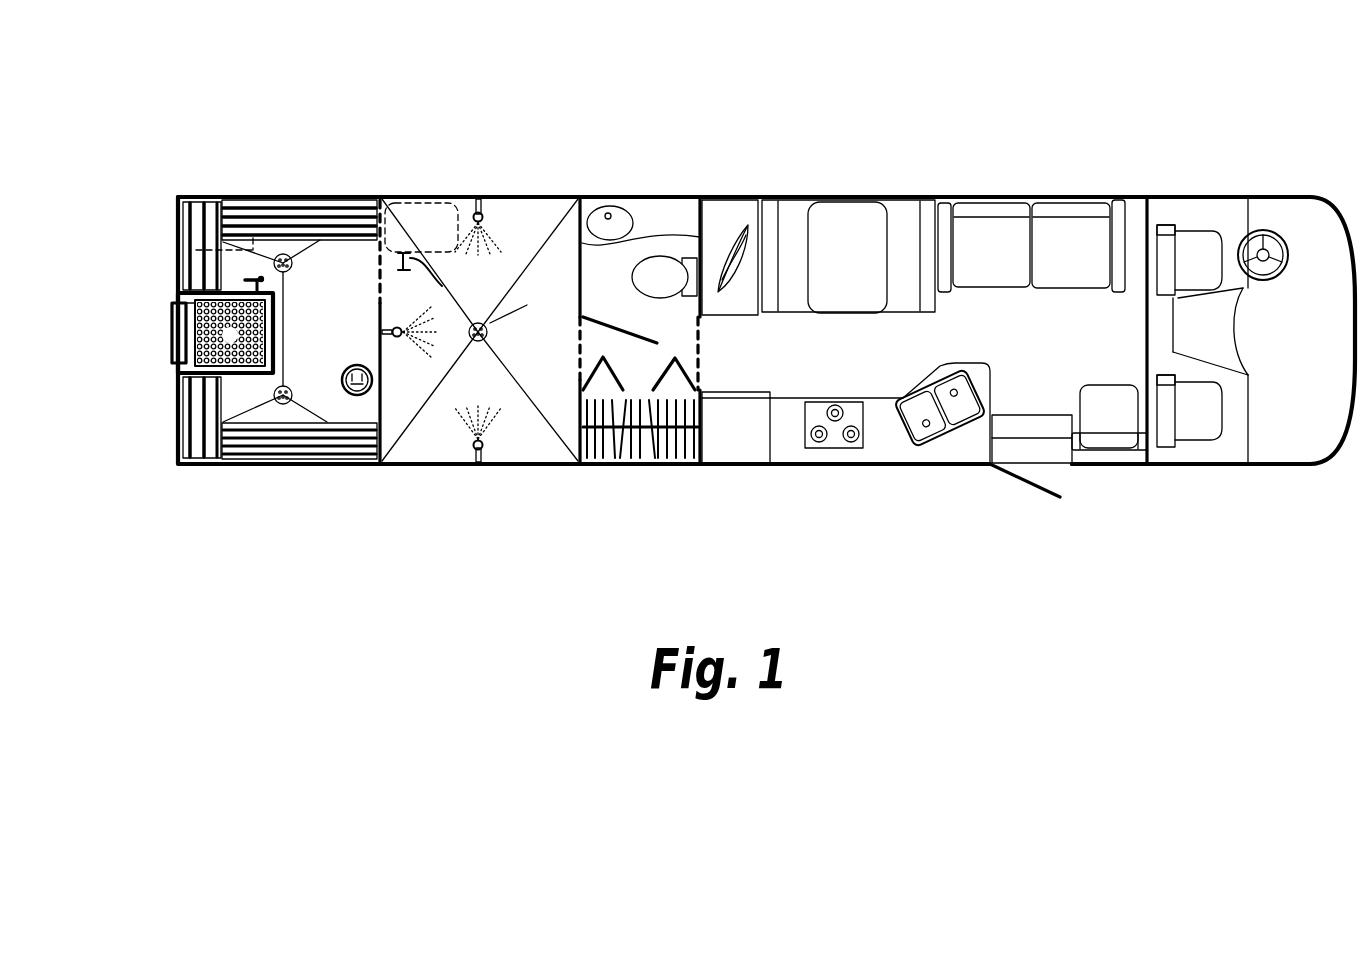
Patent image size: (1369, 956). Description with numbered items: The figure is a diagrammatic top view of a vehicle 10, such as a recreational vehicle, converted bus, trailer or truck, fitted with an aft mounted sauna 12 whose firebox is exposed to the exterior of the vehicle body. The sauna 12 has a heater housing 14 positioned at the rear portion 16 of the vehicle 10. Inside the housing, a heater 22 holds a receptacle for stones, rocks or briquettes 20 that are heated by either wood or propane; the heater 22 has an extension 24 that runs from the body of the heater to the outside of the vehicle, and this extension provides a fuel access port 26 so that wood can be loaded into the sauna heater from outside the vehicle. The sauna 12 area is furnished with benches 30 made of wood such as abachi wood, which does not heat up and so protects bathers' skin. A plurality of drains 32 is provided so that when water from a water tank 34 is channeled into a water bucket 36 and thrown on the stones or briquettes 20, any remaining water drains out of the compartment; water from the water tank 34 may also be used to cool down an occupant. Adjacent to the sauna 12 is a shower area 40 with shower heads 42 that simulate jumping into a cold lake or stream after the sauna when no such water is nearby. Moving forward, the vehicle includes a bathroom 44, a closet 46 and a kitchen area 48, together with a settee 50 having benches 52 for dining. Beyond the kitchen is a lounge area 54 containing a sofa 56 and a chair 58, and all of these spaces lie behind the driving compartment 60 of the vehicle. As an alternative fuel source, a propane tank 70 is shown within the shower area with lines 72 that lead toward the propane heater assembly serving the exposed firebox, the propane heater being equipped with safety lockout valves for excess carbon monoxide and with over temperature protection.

The vehicle 10 is at (1095, 187).
The sauna 12 is at (303, 196).
The heater housing 14 is at (175, 348).
The rear portion 16 is at (176, 435).
The stones, rocks or briquettes 20 is at (255, 325).
The heater 22 is at (234, 288).
The extension 24 is at (175, 330).
The fuel access port 26 is at (129, 266).
The benches 30 is at (327, 203).
The drains 32 is at (292, 270).
The water tank 34 is at (223, 194).
The water bucket 36 is at (353, 398).
The shower area 40 is at (523, 195).
The shower heads 42 is at (490, 217).
The bathroom 44 is at (645, 222).
The closet 46 is at (663, 445).
The kitchen area 48 is at (845, 432).
The settee 50 is at (832, 225).
The benches 52 is at (788, 298).
The lounge area 54 is at (1031, 222).
The sofa 56 is at (1071, 264).
The chair 58 is at (1101, 396).
The driving compartment 60 is at (1222, 470).
The propane tank 70 is at (418, 214).
The lines 72 is at (443, 287).